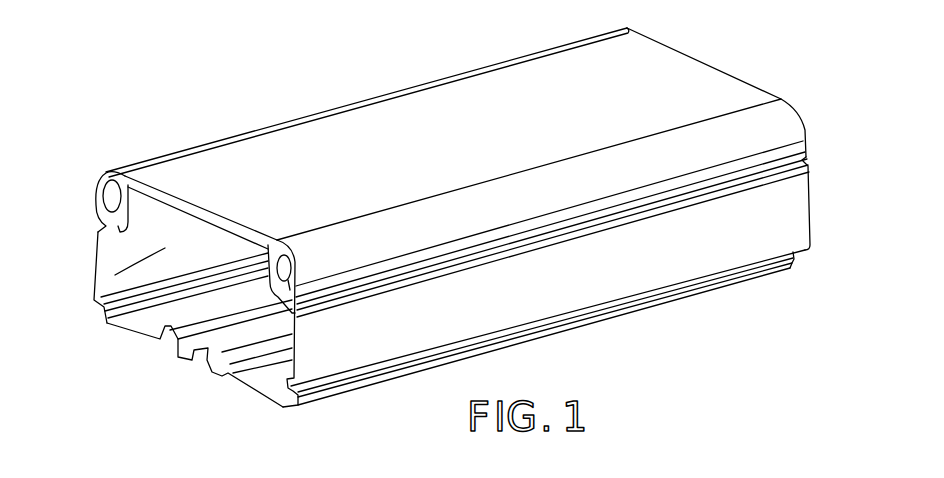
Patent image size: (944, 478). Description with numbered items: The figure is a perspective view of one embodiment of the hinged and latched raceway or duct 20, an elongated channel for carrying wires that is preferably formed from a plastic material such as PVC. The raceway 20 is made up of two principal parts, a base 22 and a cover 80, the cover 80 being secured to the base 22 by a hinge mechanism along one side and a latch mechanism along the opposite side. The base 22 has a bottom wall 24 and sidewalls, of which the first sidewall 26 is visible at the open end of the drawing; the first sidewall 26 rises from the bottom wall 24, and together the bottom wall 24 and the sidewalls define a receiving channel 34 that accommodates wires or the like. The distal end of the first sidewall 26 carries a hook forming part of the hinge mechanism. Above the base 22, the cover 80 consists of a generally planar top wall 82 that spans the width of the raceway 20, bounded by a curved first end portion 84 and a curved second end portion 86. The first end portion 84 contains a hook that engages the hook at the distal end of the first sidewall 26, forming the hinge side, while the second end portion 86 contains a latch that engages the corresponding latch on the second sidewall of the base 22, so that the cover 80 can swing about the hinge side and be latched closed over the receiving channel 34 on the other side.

The hinged and latched raceway 20 is at (318, 85).
The base 22 is at (97, 243).
The bottom wall 24 is at (158, 322).
The first sidewall 26 is at (93, 232).
The receiving channel 34 is at (95, 280).
The cover 80 is at (718, 68).
The top wall 82 is at (634, 47).
The first end portion 84 is at (172, 153).
The second end portion 86 is at (767, 127).